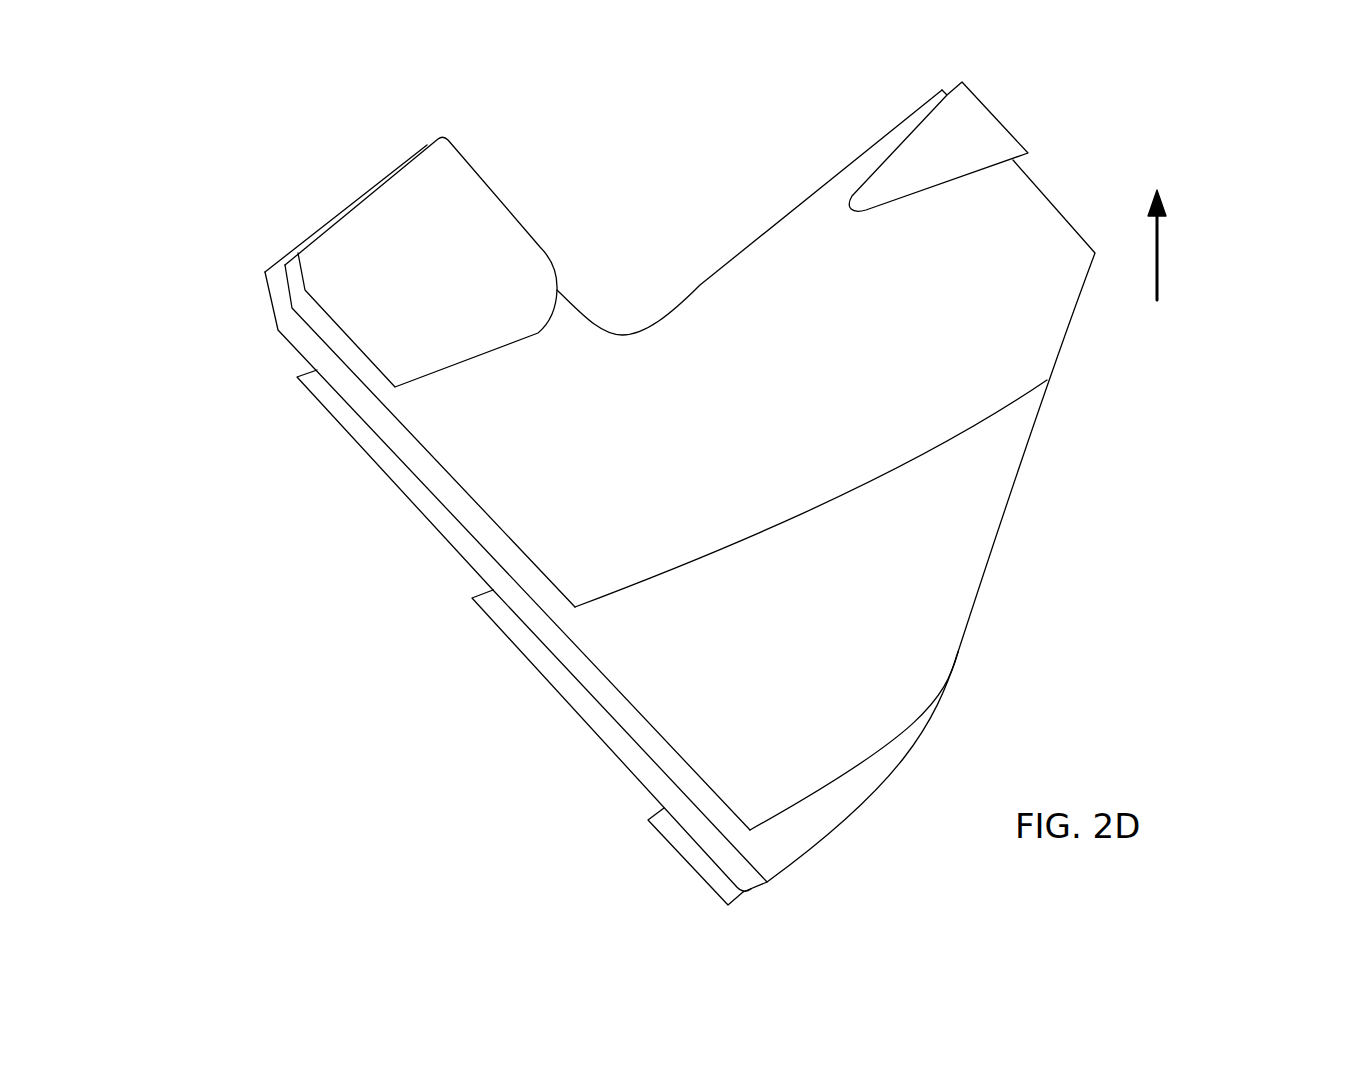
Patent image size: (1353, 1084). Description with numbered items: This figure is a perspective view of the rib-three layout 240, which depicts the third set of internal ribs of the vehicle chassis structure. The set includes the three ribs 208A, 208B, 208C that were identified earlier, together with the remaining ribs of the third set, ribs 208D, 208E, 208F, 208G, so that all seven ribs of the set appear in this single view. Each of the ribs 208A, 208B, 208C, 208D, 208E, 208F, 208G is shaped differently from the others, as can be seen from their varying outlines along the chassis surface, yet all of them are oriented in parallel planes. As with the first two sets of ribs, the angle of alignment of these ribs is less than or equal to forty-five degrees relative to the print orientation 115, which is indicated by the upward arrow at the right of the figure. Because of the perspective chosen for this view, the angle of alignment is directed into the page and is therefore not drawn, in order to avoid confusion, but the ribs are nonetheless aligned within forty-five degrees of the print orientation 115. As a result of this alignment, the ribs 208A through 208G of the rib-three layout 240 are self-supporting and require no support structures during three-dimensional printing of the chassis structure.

The rib-3 layout 240 is at (250, 172).
The rib-3 208A is at (420, 254).
The rib-3 208B is at (497, 398).
The rib-3 208C is at (667, 613).
The rib-3 208D is at (612, 707).
The rib-3 208E is at (663, 797).
The rib-3 208F is at (672, 850).
The rib-3 208G is at (980, 138).
The print orientation 115 is at (1202, 261).